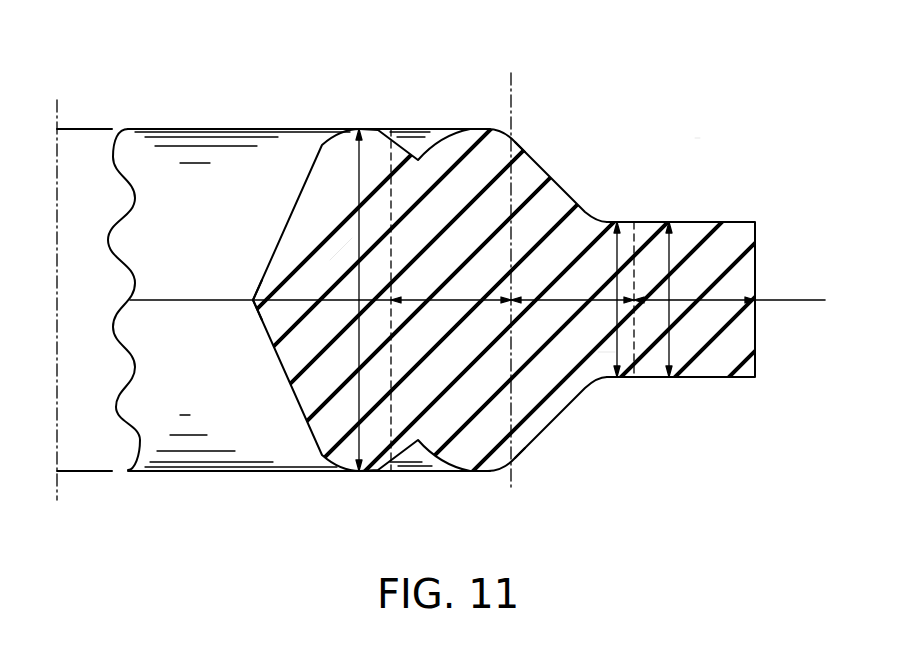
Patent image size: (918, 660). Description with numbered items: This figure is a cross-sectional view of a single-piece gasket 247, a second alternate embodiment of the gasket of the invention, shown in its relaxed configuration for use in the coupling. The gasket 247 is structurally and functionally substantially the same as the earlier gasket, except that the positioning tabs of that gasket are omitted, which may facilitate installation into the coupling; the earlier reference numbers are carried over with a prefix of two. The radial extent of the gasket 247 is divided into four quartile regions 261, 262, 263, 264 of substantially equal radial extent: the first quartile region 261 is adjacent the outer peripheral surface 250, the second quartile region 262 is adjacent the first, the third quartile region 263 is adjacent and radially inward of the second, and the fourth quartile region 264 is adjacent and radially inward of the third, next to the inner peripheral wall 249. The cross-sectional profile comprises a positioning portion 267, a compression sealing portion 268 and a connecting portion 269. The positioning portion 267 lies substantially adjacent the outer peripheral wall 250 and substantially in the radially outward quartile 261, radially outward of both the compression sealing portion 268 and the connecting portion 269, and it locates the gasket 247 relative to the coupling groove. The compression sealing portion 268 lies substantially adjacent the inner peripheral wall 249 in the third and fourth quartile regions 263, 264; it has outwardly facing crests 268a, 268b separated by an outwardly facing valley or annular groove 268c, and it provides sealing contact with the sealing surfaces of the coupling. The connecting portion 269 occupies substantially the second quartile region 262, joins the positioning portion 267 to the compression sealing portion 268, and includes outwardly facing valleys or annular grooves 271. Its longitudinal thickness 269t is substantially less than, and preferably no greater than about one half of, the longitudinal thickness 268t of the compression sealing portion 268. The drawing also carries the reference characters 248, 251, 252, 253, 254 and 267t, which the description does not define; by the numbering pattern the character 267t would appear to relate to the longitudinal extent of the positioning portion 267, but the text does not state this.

The gasket 247 is at (700, 135).
The axis reference line 248 is at (57, 102).
The inner peripheral wall 249 is at (281, 364).
The outer peripheral surface 250 is at (755, 343).
The upper sloped surface 251 is at (540, 168).
The lower sloped surface 252 is at (550, 423).
The reference plane 253 is at (515, 80).
The centerline 254 is at (803, 298).
The first quartile region 261 is at (710, 303).
The second quartile region 262 is at (552, 303).
The third quartile region 263 is at (437, 303).
The fourth quartile region 264 is at (265, 303).
The positioning portion 267 is at (753, 276).
The thickness of end section 267t is at (670, 245).
The compression sealing portion 268 is at (470, 239).
The crest 268a is at (359, 125).
The crest 268b is at (488, 128).
The valley or annular groove 268c is at (418, 158).
The longitudinal thickness of the compression sealing portion 268t is at (352, 243).
The connecting portion 269 is at (593, 277).
The longitudinal thickness of the connecting portion 269t is at (615, 352).
The valleys or annular grooves 271 is at (615, 222).